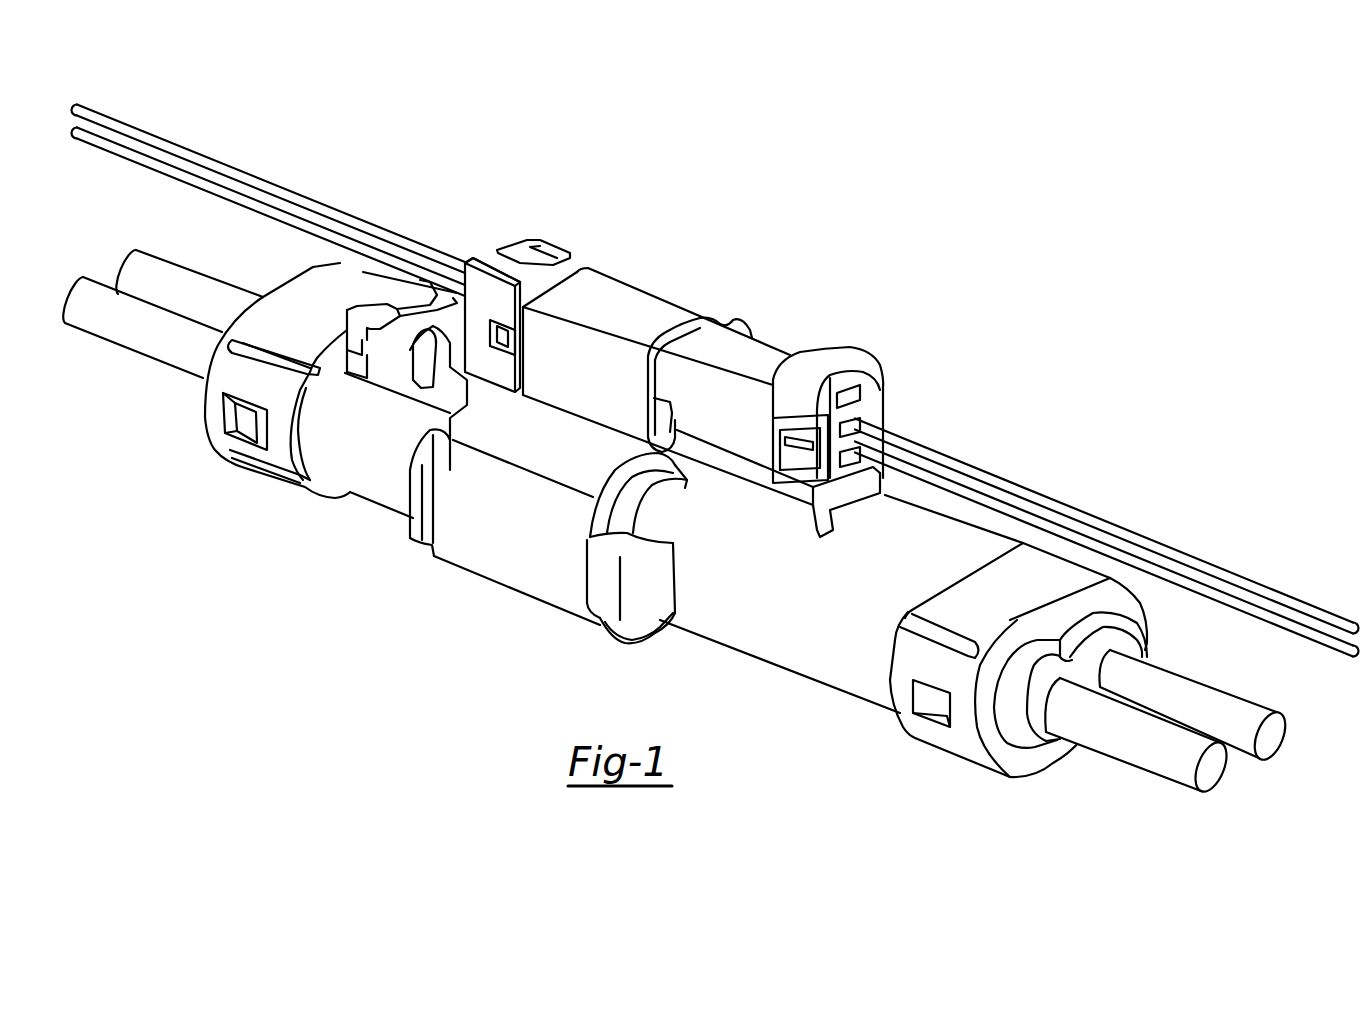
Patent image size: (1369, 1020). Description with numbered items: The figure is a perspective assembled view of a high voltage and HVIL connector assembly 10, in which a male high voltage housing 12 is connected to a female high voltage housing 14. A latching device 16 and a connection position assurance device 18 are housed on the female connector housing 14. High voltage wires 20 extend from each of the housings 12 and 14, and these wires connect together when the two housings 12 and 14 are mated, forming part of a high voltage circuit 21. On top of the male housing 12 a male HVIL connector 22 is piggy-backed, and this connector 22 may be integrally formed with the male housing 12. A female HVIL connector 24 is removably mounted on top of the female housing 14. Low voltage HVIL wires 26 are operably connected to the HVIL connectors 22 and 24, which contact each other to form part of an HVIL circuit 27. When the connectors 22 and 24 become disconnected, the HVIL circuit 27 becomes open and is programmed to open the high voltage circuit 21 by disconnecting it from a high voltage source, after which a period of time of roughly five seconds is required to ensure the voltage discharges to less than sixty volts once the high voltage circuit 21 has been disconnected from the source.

The high voltage and HVIL connector assembly 10 is at (626, 226).
The male high voltage housing 12 is at (797, 660).
The female high voltage housing 14 is at (507, 578).
The latching device 16 is at (425, 340).
The connection position assurance device 18 is at (356, 309).
The high voltage wires 20 is at (141, 308).
The high voltage circuit 21 is at (1183, 668).
The male HVIL connector 22 is at (765, 350).
The female HVIL connector 24 is at (653, 300).
The low voltage HVIL wires 26 is at (303, 221).
The HVIL circuit 27 is at (983, 458).